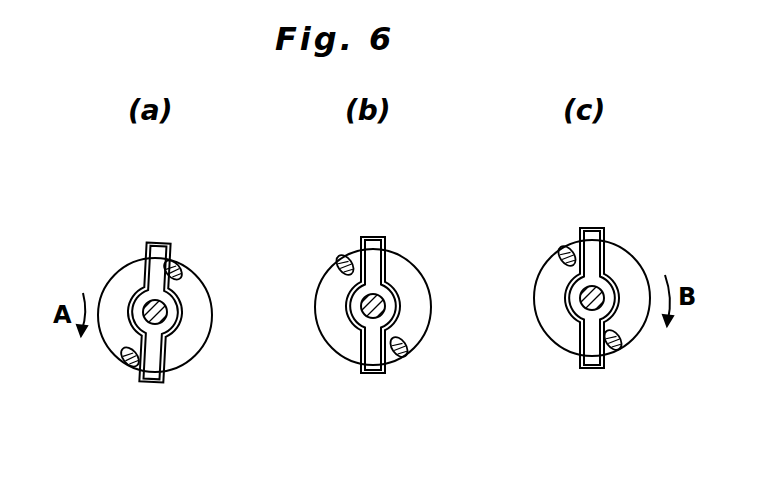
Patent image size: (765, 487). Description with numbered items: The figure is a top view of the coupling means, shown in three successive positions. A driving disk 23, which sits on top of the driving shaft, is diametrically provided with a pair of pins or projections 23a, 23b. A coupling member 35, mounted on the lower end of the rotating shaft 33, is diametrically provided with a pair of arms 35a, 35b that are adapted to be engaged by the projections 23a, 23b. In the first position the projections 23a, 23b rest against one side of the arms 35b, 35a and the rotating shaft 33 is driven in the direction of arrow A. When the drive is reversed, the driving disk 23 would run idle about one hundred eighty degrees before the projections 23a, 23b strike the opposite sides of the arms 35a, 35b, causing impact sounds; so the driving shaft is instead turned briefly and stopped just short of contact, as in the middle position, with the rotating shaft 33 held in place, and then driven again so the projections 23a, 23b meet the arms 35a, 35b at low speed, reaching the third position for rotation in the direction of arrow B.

The driving disk 23 is at (117, 290).
The projection 23a is at (180, 272).
The projection 23b is at (124, 357).
The rotating shaft 33 is at (165, 322).
The coupling member 35 is at (170, 305).
The arm 35a is at (145, 380).
The arm 35b is at (163, 251).